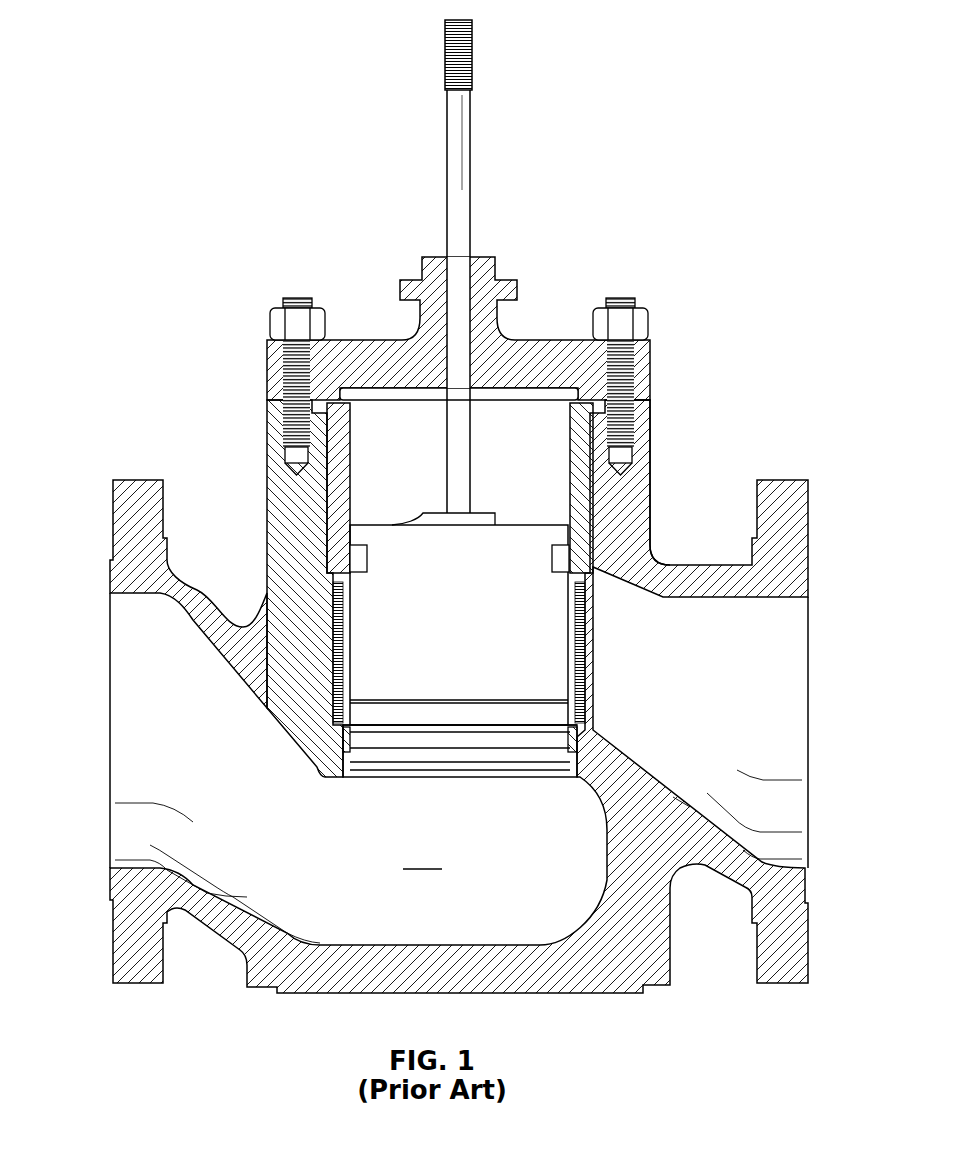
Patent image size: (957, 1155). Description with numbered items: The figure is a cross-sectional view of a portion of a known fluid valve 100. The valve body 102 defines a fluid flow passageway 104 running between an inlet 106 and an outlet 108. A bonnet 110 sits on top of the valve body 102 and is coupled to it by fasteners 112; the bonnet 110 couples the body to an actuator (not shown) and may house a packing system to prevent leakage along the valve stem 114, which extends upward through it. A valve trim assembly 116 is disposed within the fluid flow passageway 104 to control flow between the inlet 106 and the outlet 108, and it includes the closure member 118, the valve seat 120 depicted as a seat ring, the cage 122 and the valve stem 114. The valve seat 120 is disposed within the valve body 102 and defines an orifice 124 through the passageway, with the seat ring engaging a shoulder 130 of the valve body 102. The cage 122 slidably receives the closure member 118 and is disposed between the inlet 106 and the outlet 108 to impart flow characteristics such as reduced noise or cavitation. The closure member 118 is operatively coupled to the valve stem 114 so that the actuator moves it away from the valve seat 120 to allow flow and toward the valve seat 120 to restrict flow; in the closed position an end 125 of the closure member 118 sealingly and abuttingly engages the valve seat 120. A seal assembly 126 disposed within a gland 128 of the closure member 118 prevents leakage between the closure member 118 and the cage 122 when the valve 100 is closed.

The fluid valve 100 is at (283, 56).
The valve body 102 is at (672, 980).
The fluid flow passageway 104 is at (424, 858).
The inlet 106 is at (110, 745).
The outlet 108 is at (808, 735).
The bonnet 110 is at (510, 339).
The fasteners 112 is at (297, 300).
The valve stem 114 is at (472, 157).
The valve trim assembly 116 is at (300, 499).
The closure member 118 is at (560, 660).
The valve seat 120 is at (348, 735).
The cage 122 is at (590, 500).
The orifice 124 is at (497, 733).
The end of the closure member 125 is at (570, 727).
The seal assembly 126 is at (367, 558).
The gland 128 is at (552, 558).
The shoulder 130 is at (580, 736).